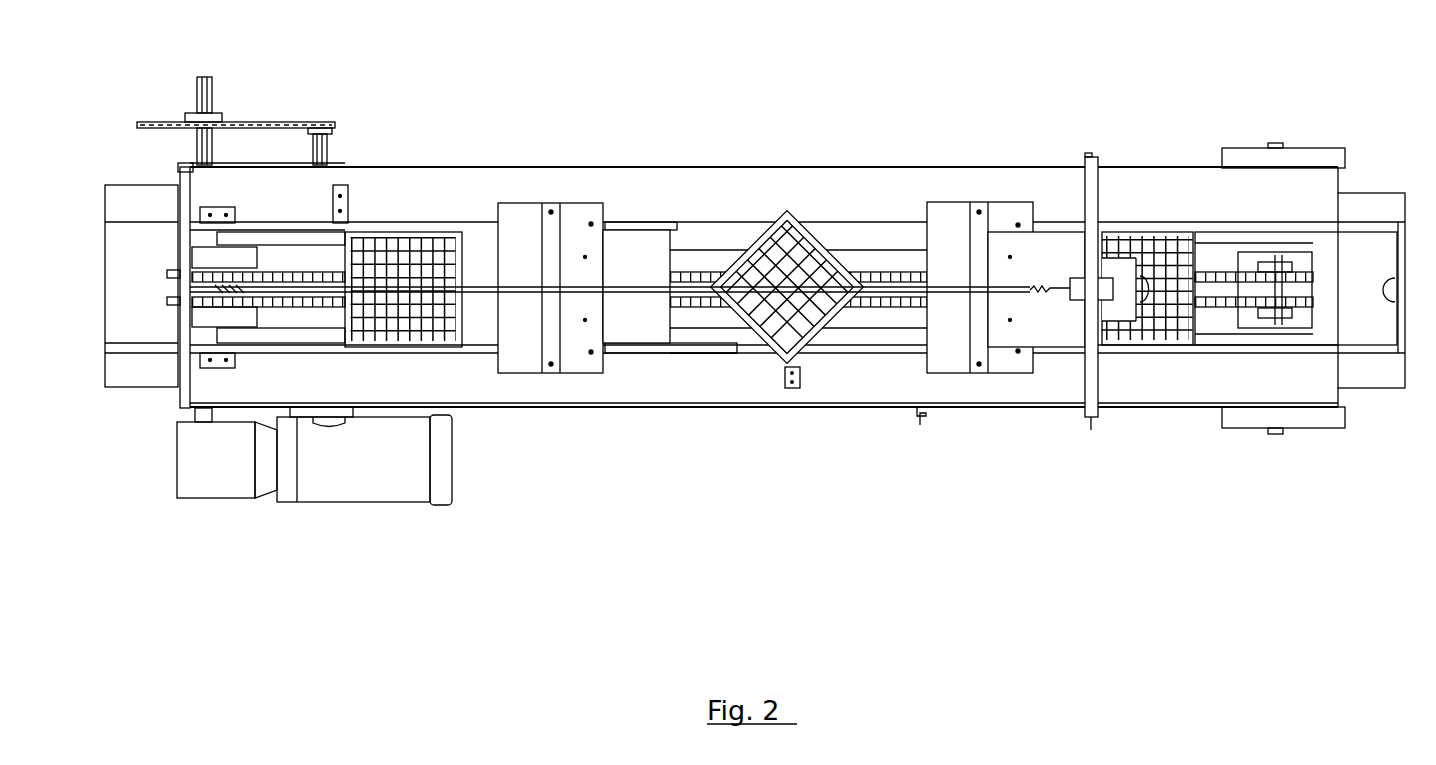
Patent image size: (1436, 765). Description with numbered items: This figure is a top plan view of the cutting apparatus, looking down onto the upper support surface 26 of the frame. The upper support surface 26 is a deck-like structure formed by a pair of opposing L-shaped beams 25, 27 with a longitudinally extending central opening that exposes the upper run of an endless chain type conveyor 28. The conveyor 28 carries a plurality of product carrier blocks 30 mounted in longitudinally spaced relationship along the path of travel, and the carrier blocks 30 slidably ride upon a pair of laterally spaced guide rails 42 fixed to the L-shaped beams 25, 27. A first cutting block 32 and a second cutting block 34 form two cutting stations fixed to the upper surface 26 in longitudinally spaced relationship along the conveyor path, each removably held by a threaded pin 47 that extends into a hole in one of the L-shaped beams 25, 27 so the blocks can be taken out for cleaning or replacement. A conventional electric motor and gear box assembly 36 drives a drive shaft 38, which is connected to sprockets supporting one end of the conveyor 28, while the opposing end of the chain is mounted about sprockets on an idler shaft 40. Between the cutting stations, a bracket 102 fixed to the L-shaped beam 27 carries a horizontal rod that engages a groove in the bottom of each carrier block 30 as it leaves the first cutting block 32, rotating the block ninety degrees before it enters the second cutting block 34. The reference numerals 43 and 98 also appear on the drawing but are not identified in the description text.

The L-shaped beam 25 is at (663, 167).
The upper support surface 26 is at (1040, 197).
The L-shaped beam 27 is at (668, 407).
The endless chain type conveyor 28 is at (313, 270).
The product carrier block 30 is at (462, 235).
The first cutting block 32 is at (1010, 375).
The second cutting block 34 is at (572, 375).
The electric motor and gear box assembly 36 is at (362, 524).
The drive shaft 38 is at (213, 90).
The idler shaft 40 is at (1283, 287).
The guide rail 42 is at (1127, 220).
The mounting plate 43 is at (273, 122).
The threaded pin 47 is at (313, 140).
The guide rail 98 is at (290, 232).
The bracket 102 is at (340, 235).